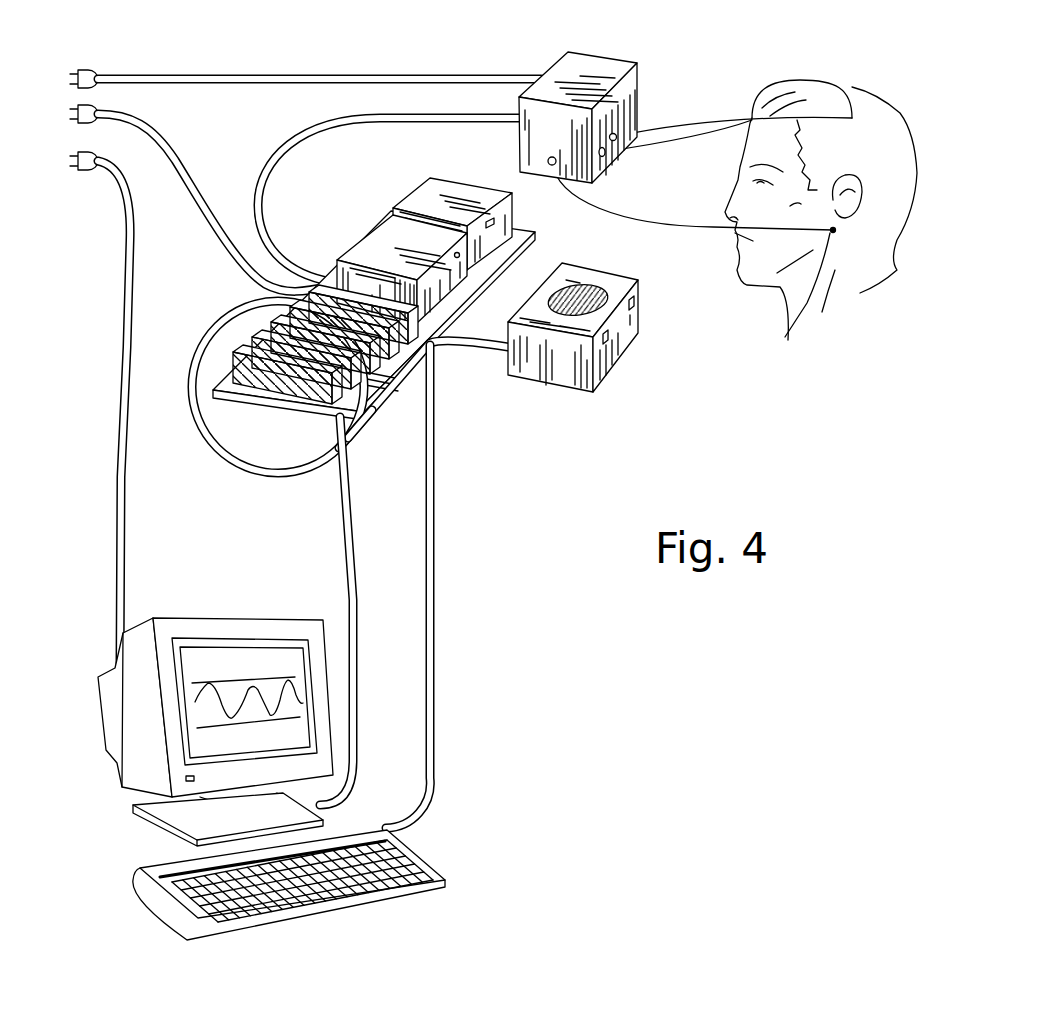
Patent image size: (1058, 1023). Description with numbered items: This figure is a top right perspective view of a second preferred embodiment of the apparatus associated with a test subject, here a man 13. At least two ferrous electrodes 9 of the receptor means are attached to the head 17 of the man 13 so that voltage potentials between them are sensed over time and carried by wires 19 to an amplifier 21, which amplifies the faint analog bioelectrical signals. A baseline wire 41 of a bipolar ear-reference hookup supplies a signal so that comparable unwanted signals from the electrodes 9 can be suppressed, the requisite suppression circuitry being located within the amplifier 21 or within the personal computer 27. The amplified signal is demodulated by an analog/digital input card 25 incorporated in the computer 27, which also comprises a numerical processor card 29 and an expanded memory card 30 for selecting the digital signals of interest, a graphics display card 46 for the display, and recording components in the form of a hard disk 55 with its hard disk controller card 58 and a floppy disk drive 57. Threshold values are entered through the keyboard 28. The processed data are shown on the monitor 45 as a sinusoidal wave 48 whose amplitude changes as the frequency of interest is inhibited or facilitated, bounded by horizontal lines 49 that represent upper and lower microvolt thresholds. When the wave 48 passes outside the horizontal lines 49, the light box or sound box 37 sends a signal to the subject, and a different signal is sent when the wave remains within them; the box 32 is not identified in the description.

The electrodes 9 is at (847, 87).
The man 13 is at (820, 320).
The head 17 is at (877, 100).
The wires 19 is at (677, 120).
The amplifier 21 is at (637, 63).
The analog/digital input card 25 is at (450, 332).
The personal computer 27 is at (537, 224).
The keyboard 28 is at (427, 862).
The numerical processor card 29 is at (435, 371).
The expanded memory card 30 is at (435, 406).
The speaker unit 32 is at (596, 340).
The light box or sound box 37 is at (603, 368).
The baseline wire 41 is at (648, 220).
The monitor 45 is at (249, 712).
The graphics display card 46 is at (368, 418).
The sinusoidal wave 48 is at (300, 695).
The horizontal lines 49 is at (295, 667).
The hard disk 55 is at (370, 233).
The floppy disk drive 57 is at (470, 193).
The hard disk controller card 58 is at (280, 392).